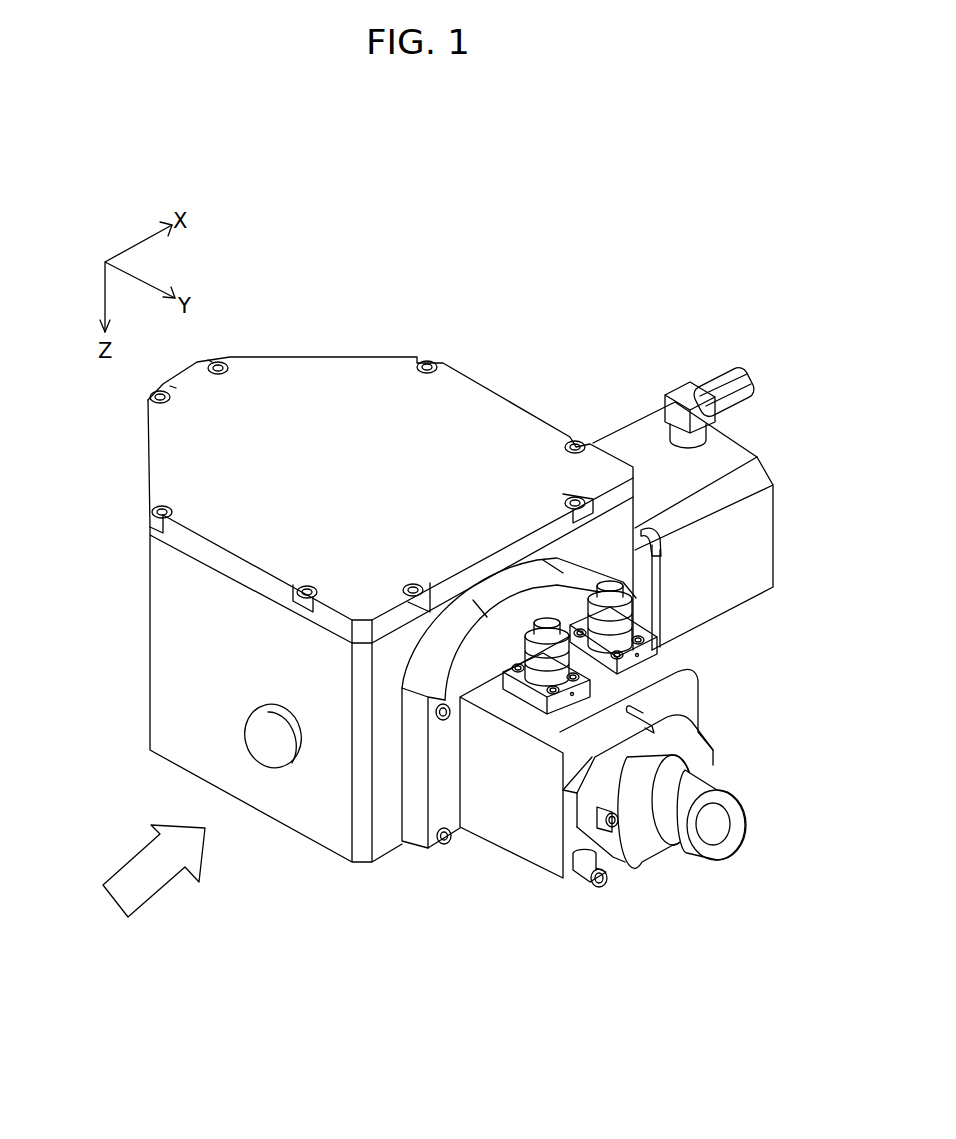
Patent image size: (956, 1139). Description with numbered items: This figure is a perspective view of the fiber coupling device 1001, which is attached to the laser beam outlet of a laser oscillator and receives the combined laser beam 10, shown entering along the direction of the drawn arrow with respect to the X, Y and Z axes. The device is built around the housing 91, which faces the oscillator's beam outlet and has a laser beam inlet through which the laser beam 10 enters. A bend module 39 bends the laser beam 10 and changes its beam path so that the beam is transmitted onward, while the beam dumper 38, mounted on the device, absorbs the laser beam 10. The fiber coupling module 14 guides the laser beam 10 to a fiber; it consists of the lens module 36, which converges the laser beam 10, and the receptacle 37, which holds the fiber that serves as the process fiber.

The fiber coupling device 1001 is at (688, 305).
The laser beam 10 is at (154, 878).
The fiber coupling module 14 is at (347, 880).
The lens module 36 is at (560, 922).
The receptacle 37 is at (705, 768).
The beam dumper 38 is at (627, 444).
The bend module 39 is at (437, 415).
The housing 91 is at (356, 378).